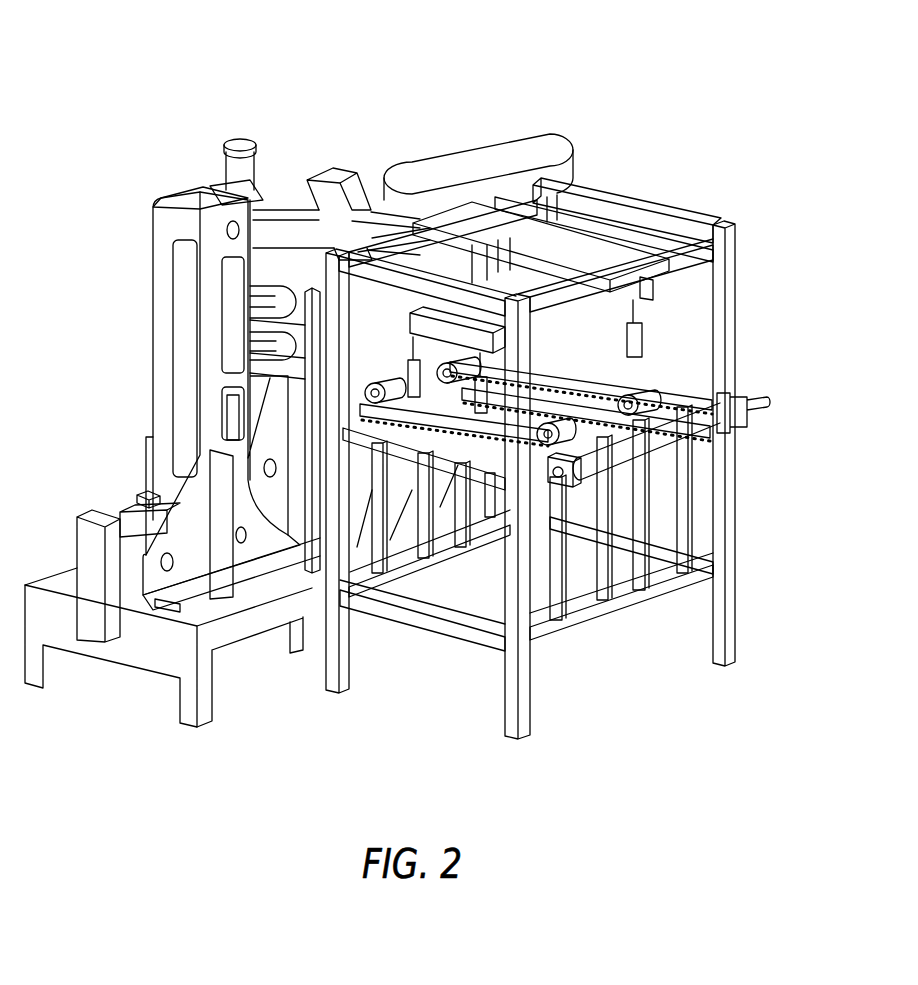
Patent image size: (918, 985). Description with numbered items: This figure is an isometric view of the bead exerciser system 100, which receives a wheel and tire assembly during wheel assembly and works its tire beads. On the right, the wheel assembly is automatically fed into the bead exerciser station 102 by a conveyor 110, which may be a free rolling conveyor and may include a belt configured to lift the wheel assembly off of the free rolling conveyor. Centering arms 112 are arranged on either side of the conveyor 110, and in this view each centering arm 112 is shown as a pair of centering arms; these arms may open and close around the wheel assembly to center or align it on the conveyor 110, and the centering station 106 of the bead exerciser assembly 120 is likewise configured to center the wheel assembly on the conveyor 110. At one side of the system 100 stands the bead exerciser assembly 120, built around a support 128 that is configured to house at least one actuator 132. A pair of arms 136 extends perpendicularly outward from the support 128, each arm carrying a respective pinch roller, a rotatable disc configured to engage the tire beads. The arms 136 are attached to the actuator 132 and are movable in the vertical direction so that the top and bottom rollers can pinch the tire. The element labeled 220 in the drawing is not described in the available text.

The bead exerciser system 100 is at (97, 73).
The bead exerciser station 102 is at (293, 128).
The centering station 106 is at (627, 383).
The conveyor 110 is at (647, 383).
The centering arm 112 is at (410, 362).
The bead exerciser assembly 120 is at (150, 203).
The support 128 is at (153, 250).
The actuator 132 is at (182, 403).
The arm 136 is at (267, 303).
The stop member 220 is at (227, 428).